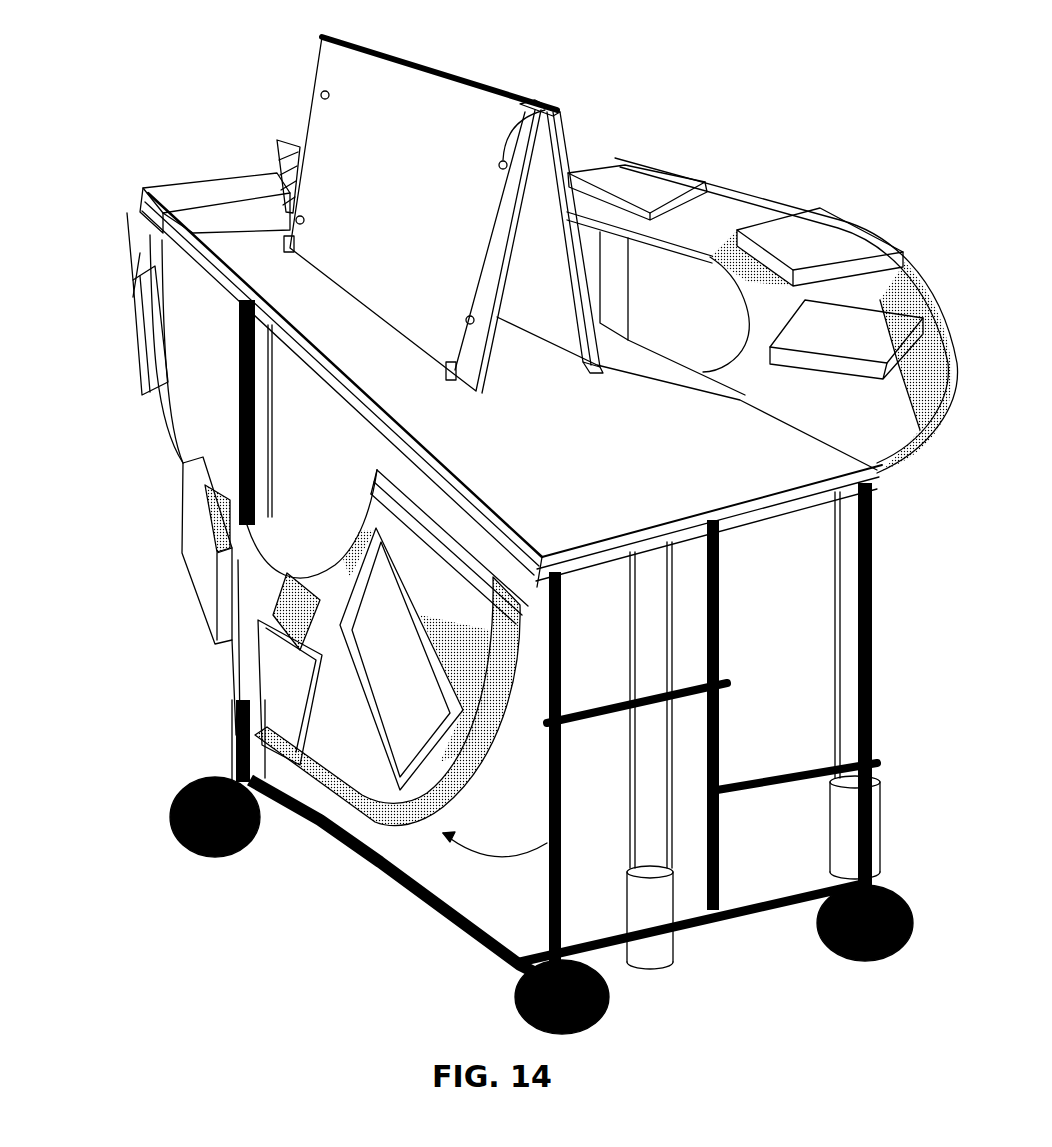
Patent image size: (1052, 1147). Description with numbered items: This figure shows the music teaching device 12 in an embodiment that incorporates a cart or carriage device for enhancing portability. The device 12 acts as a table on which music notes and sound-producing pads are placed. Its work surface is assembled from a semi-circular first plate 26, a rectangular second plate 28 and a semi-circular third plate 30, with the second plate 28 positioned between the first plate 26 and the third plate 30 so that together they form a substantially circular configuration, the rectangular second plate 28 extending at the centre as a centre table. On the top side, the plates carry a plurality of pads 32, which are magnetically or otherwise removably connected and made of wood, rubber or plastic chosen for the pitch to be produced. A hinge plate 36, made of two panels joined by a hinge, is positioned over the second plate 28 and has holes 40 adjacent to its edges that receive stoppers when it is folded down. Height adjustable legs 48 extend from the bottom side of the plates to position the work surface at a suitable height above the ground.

The music teaching device 12 is at (122, 52).
The first plate 26 is at (360, 805).
The second plate 28 is at (789, 442).
The third plate 30 is at (756, 216).
The pad 32 is at (135, 327).
The hinge plate 36 is at (462, 110).
The holes 40 is at (529, 100).
The height adjustable legs 48 is at (877, 537).